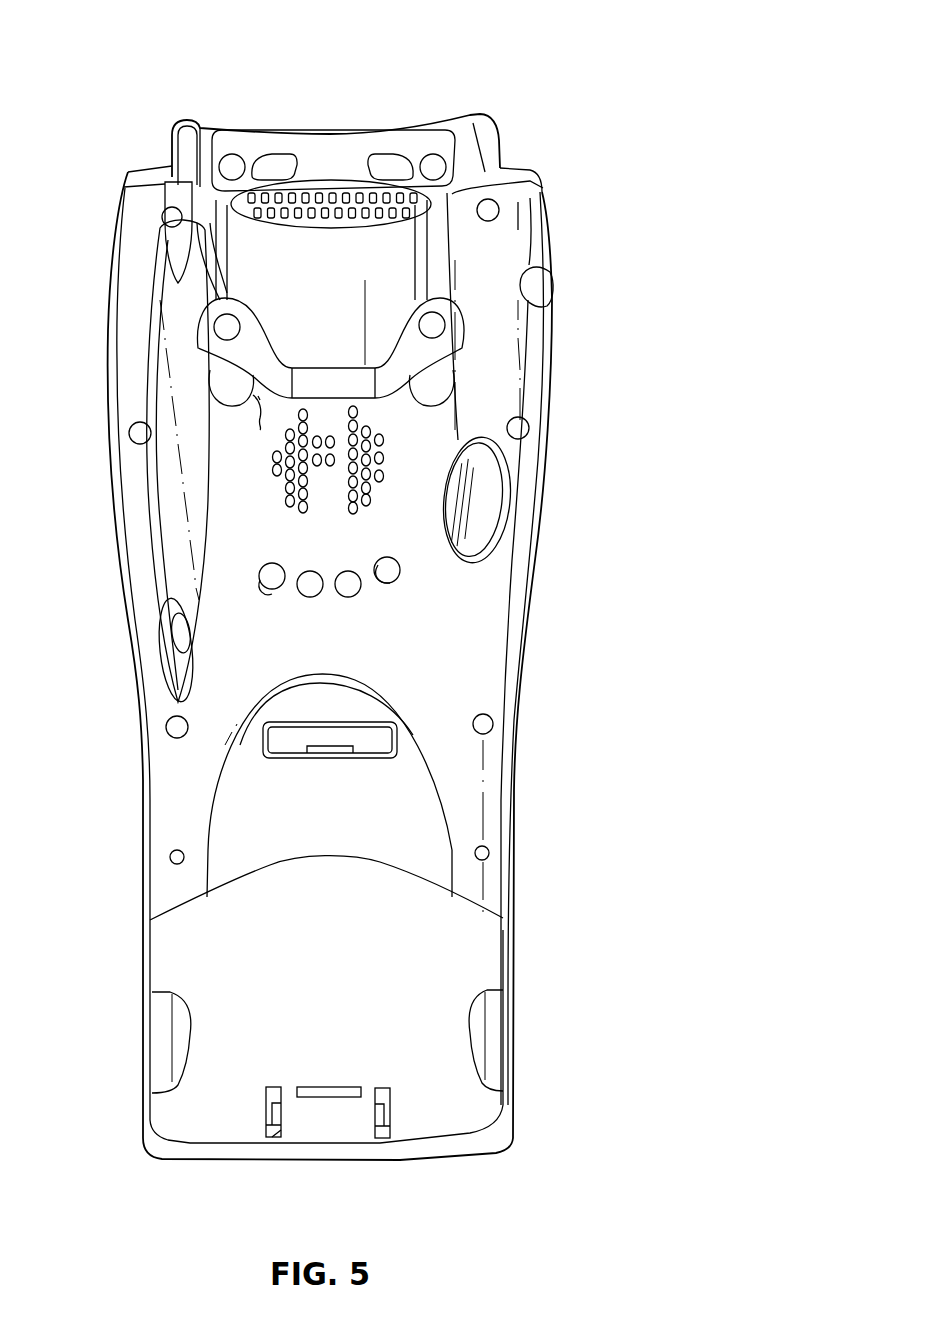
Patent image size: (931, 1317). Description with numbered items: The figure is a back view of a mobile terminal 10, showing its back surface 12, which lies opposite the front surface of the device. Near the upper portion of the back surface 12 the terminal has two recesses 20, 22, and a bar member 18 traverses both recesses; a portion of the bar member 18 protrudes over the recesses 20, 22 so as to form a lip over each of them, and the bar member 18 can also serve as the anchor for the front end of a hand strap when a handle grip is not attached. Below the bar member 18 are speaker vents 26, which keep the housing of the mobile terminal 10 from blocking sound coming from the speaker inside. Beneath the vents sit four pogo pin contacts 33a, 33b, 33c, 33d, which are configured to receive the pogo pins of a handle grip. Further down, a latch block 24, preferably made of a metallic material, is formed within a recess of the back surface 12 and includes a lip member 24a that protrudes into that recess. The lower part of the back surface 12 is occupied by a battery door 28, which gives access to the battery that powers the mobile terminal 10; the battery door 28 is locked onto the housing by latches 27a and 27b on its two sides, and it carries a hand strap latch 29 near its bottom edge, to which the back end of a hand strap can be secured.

The mobile terminal 10 is at (500, 75).
The back surface 12 is at (533, 359).
The bar member 18 is at (450, 308).
The recess 20 is at (262, 400).
The recess 22 is at (455, 388).
The latch block 24 is at (396, 735).
The lip member 24a is at (397, 750).
The speaker vents 26 is at (280, 488).
The latch 27a is at (155, 1048).
The latch 27b is at (498, 1052).
The battery door 28 is at (515, 918).
The hand strap latch 29 is at (280, 1120).
The pogo pin contact 33a is at (264, 592).
The pogo pin contact 33b is at (312, 598).
The pogo pin contact 33c is at (355, 594).
The pogo pin contact 33d is at (400, 578).